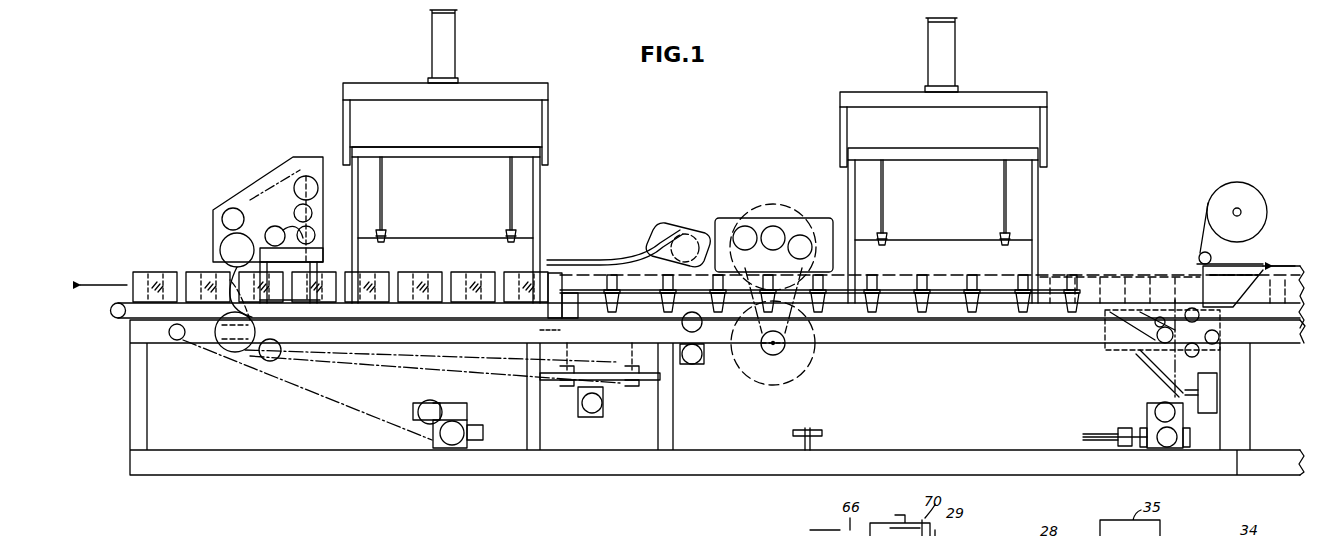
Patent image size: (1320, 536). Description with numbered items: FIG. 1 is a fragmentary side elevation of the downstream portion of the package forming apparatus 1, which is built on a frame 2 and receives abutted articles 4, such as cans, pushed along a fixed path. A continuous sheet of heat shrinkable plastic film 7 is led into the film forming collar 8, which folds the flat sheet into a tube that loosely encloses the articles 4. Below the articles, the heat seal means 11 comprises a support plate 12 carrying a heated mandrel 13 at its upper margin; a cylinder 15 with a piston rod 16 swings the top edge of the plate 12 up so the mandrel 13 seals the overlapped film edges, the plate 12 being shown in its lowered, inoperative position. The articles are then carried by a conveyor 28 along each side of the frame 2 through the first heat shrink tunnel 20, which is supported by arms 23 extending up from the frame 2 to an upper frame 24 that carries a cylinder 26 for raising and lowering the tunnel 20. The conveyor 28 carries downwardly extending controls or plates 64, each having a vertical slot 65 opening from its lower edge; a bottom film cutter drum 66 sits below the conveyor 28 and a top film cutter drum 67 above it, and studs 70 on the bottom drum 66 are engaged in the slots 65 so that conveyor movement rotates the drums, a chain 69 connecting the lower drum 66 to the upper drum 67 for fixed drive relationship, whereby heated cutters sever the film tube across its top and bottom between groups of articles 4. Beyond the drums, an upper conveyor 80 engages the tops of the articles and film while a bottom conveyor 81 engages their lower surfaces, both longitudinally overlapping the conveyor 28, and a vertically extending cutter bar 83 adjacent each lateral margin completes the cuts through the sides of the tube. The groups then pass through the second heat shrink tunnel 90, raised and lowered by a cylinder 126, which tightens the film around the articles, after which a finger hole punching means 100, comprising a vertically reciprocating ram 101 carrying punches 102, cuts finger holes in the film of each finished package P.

The package forming apparatus 1 is at (613, 144).
The frame 2 is at (1148, 273).
The articles 4 is at (1276, 300).
The heat shrinkable plastic film 7 is at (1197, 266).
The film forming collar 8 is at (1235, 266).
The heat seal means 11 is at (1107, 330).
The support plate 12 is at (1130, 312).
The mandrel 13 is at (1112, 352).
The cylinder 15 is at (1183, 393).
The piston rod 16 is at (1153, 347).
The first heat shrink tunnel 20 is at (1043, 185).
The arms 23 is at (848, 188).
The upper frame 24 is at (1047, 128).
The cylinder 26 is at (950, 57).
The conveyor 28 is at (925, 312).
The controls or plates 64 is at (867, 312).
The slot 65 is at (967, 310).
The bottom film cutter drum 66 is at (800, 365).
The top film cutter drum 67 is at (790, 202).
The chain 69 is at (721, 363).
The studs 70 is at (772, 200).
The upper conveyor 80 is at (677, 236).
The bottom conveyor 81 is at (685, 332).
The cutter bar 83 is at (514, 313).
The second heat shrink tunnel 90 is at (543, 178).
The finger hole punching means 100 is at (394, 298).
The ram 101 is at (323, 254).
The punches 102 is at (308, 298).
The cylinder 126 is at (457, 52).
The package P is at (138, 268).